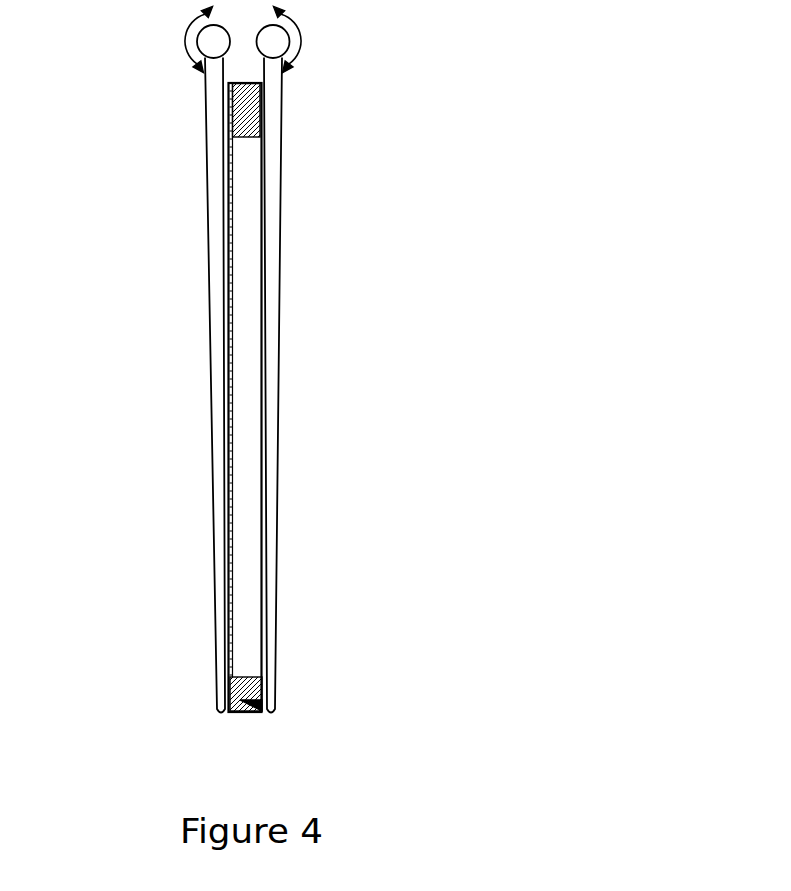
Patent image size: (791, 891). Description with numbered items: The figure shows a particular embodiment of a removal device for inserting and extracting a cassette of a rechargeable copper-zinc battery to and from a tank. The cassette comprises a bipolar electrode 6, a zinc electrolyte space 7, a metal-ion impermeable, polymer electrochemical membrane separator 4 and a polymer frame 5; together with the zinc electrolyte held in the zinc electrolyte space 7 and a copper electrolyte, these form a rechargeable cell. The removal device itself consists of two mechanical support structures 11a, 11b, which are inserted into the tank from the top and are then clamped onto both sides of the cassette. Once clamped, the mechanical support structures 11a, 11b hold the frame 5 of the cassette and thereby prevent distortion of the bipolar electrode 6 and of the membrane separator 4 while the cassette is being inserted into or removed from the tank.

The metal-ion impermeable, polymer electrochemical membrane separator 4 is at (262, 213).
The polymer frame 5 is at (250, 115).
The bipolar electrode 6 is at (233, 287).
The zinc electrolyte space 7 is at (242, 460).
The mechanical support structure 11a is at (215, 186).
The mechanical support structure 11b is at (273, 176).